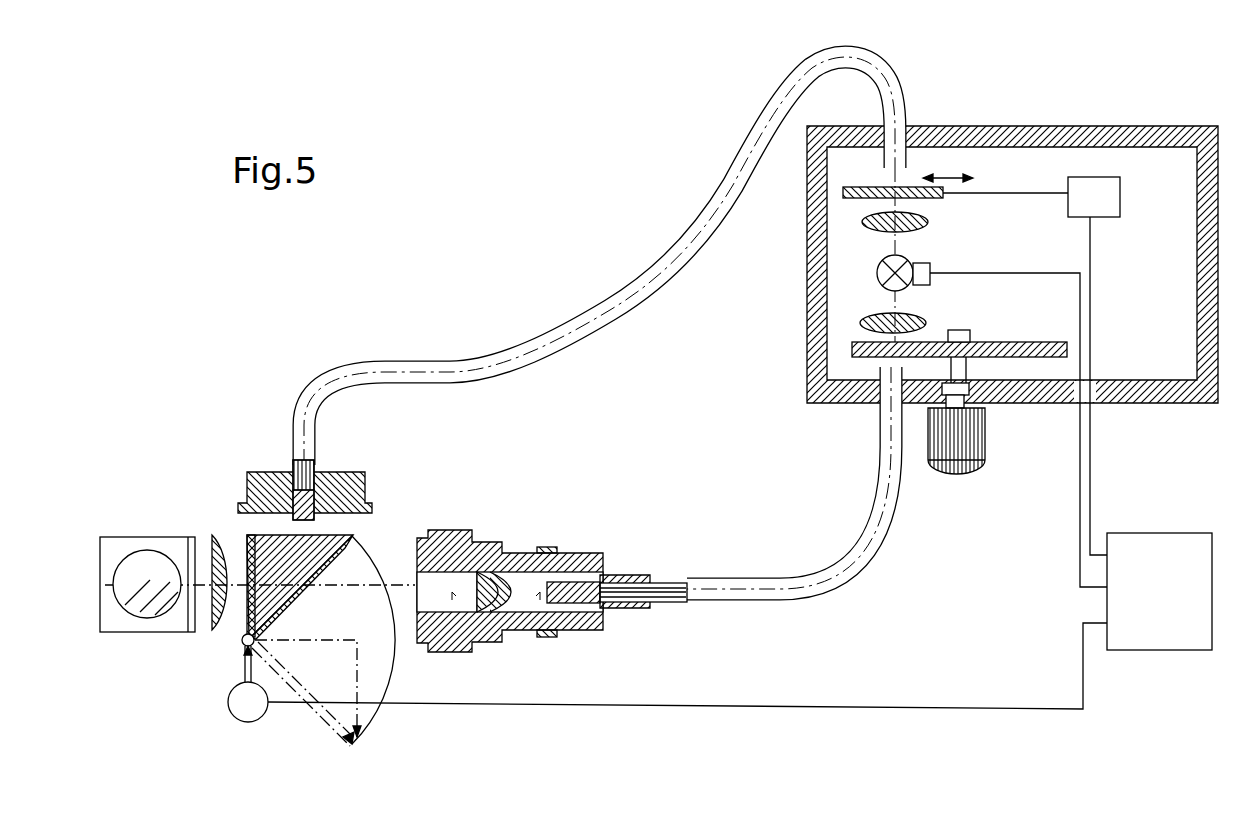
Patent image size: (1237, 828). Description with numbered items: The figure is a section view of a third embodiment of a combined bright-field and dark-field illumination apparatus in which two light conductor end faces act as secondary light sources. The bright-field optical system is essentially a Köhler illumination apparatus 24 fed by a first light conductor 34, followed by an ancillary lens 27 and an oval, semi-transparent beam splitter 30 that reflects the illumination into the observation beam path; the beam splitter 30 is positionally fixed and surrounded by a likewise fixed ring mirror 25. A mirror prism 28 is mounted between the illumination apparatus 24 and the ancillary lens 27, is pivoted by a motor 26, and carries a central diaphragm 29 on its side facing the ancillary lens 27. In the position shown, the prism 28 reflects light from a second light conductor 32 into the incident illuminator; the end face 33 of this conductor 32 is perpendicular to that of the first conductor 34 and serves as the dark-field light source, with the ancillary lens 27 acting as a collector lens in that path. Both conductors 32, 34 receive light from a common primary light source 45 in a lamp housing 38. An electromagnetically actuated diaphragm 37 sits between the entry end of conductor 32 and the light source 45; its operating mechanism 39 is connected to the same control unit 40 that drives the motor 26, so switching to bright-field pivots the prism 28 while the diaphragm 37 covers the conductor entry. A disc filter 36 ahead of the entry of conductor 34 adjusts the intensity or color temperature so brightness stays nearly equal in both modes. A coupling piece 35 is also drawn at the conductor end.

The Köhler illumination apparatus 24 is at (518, 553).
The ring mirror 25 is at (128, 628).
The motor 26 is at (258, 722).
The ancillary lens 27 is at (218, 635).
The mirror prism 28 is at (352, 537).
The central diaphragm 29 is at (245, 575).
The semi-transparent beam splitter 30 is at (140, 572).
The second light conductor 32 is at (536, 345).
The end face 33 is at (312, 521).
The first light conductor 34 is at (750, 601).
The fiber sleeve 35 is at (533, 600).
The disc filter 36 is at (984, 342).
The electromagnetically actuated diaphragm 37 is at (918, 187).
The lamp housing 38 is at (1116, 132).
The operating mechanism 39 is at (1106, 214).
The control unit 40 is at (1160, 534).
The primary light source 45 is at (912, 262).